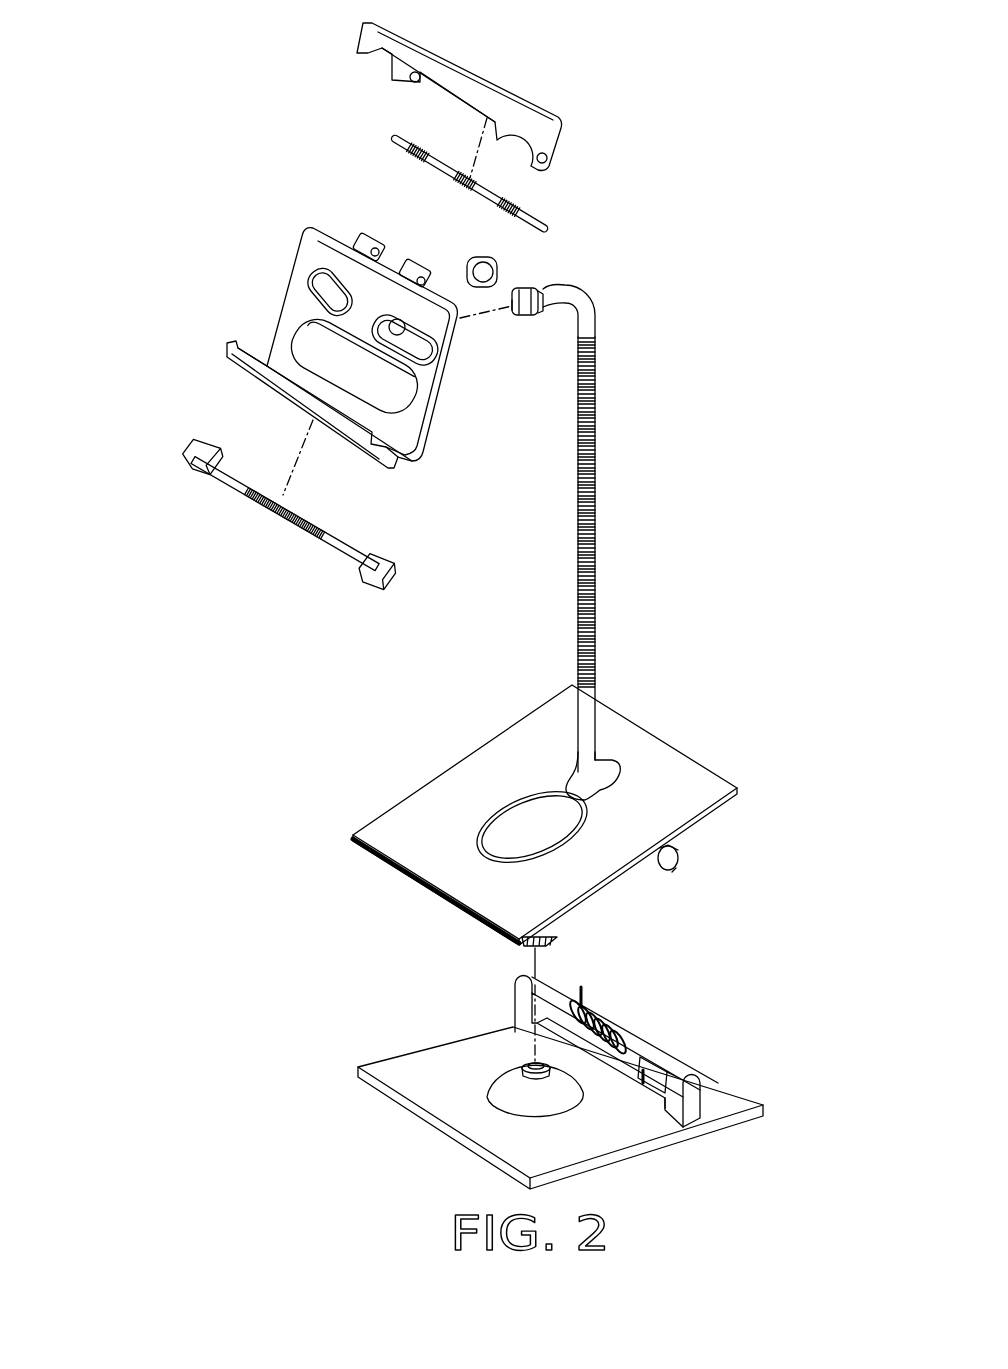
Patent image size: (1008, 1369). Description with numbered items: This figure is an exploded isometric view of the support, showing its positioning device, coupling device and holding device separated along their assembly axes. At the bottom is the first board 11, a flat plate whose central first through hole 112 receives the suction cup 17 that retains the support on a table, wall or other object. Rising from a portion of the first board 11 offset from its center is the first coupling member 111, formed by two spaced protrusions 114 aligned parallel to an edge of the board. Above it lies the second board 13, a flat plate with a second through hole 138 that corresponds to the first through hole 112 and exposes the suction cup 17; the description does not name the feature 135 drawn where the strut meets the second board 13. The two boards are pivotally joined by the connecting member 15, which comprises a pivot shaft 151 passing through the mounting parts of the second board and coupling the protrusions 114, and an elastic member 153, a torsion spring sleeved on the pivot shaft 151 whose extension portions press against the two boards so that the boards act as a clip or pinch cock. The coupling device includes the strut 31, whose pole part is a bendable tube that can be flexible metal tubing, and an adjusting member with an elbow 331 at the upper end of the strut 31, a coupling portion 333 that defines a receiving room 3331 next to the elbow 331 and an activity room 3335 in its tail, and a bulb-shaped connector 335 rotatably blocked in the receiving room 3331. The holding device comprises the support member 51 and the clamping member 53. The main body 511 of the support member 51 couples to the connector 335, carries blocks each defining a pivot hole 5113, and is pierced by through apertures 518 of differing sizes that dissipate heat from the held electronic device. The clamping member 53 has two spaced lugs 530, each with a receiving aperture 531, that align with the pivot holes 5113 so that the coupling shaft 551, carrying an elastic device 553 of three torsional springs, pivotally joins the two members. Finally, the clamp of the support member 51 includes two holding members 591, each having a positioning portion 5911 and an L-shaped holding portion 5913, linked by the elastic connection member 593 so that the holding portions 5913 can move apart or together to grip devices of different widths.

The first board 11 is at (571, 1058).
The first coupling member 111 is at (667, 1108).
The first through hole 112 is at (488, 1093).
The protrusions 114 is at (693, 1102).
The second board 13 is at (554, 813).
The connecting bracket 135 is at (588, 745).
The second through hole 138 is at (510, 838).
The connecting member 15 is at (674, 1027).
The pivot shaft 151 is at (640, 1055).
The elastic member 153 is at (582, 990).
The suction cup 17 is at (517, 1087).
The strut 31 is at (617, 529).
The elbow 331 is at (590, 325).
The coupling portion 333 is at (518, 249).
The receiving room 3331 is at (488, 265).
The connector 335 is at (560, 325).
The activity room 3335 is at (512, 305).
The support member 51 is at (314, 305).
The main body 511 is at (342, 305).
The pivot hole 5113 is at (378, 246).
The through apertures 518 is at (300, 343).
The clamping member 53 is at (434, 97).
The lugs 530 is at (400, 68).
The receiving aperture 531 is at (552, 155).
The coupling shaft 551 is at (471, 156).
The elastic device 553 is at (412, 142).
The holding members 591 is at (280, 583).
The positioning portion 5911 is at (338, 557).
The holding portion 5913 is at (374, 620).
The connection member 593 is at (294, 520).